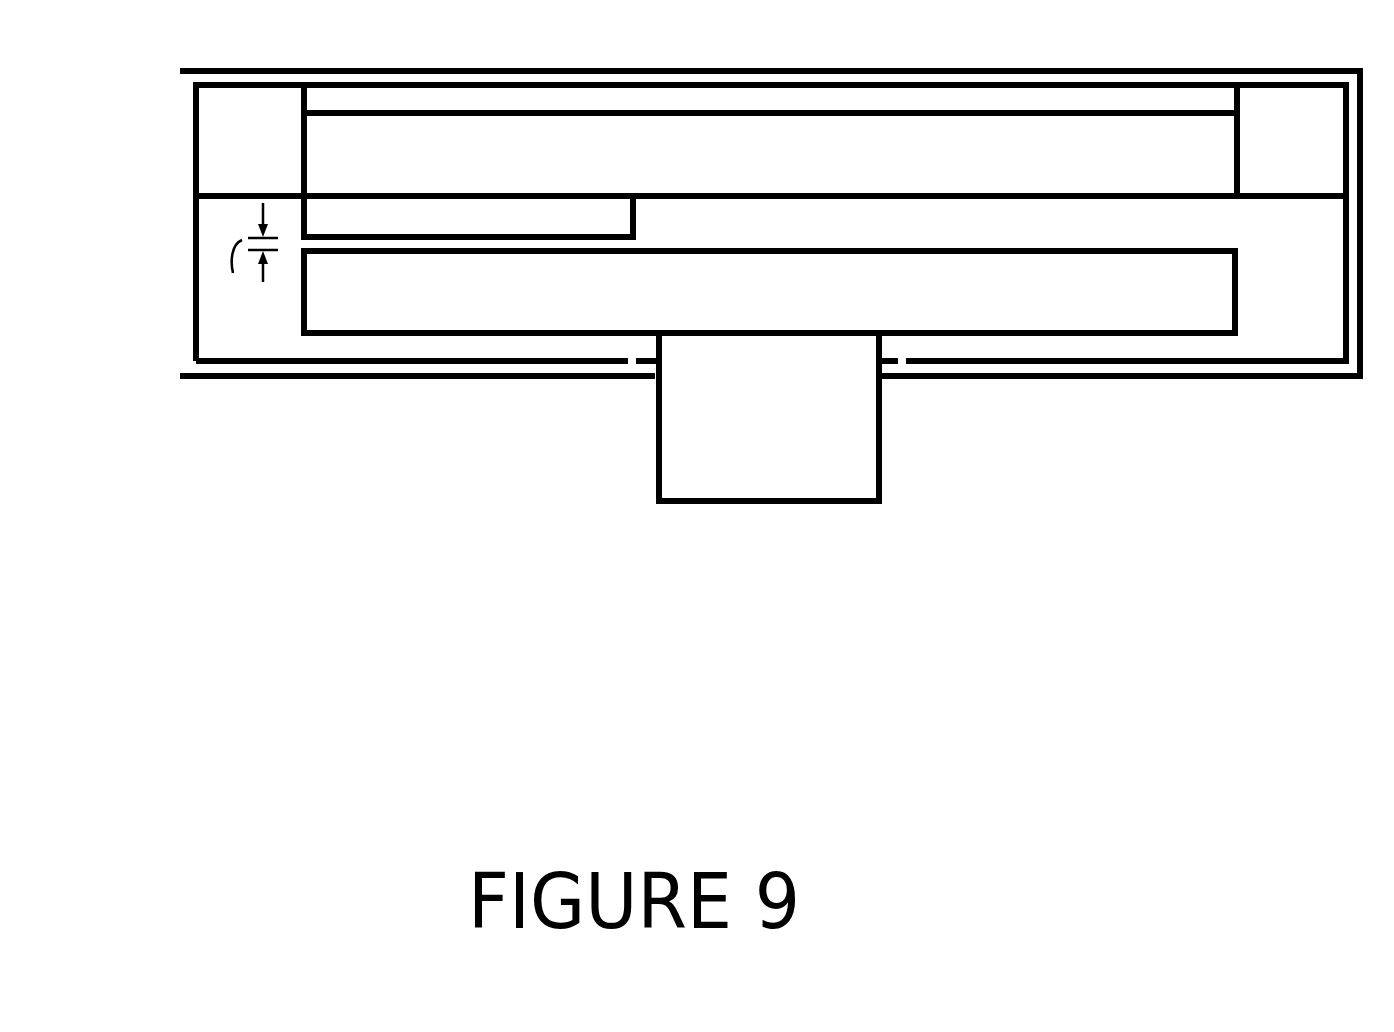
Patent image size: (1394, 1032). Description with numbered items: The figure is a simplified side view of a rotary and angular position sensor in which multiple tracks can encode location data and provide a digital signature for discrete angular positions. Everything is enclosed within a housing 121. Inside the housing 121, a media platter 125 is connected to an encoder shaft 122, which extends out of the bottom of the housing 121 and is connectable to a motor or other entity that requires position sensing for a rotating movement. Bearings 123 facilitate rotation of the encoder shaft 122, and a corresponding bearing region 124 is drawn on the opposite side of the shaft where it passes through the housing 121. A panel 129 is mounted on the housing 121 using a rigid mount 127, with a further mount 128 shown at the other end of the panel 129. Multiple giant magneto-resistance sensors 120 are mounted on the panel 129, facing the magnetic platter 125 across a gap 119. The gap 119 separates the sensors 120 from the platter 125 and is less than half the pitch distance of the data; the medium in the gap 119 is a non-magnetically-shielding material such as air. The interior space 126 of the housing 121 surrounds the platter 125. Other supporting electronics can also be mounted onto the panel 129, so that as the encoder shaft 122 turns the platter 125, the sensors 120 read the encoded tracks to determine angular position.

The gap 119 is at (244, 264).
The giant magneto-resistance (GMR) sensors 120 is at (634, 222).
The housing 121 is at (1349, 383).
The encoder shaft 122 is at (873, 505).
The bearings 123 is at (650, 380).
The right opening 124 is at (898, 380).
The media platter 125 is at (1048, 311).
The chamber 126 is at (1323, 292).
The rigid mount 127 is at (288, 152).
The right end block 128 is at (1341, 152).
The panel 129 is at (928, 180).